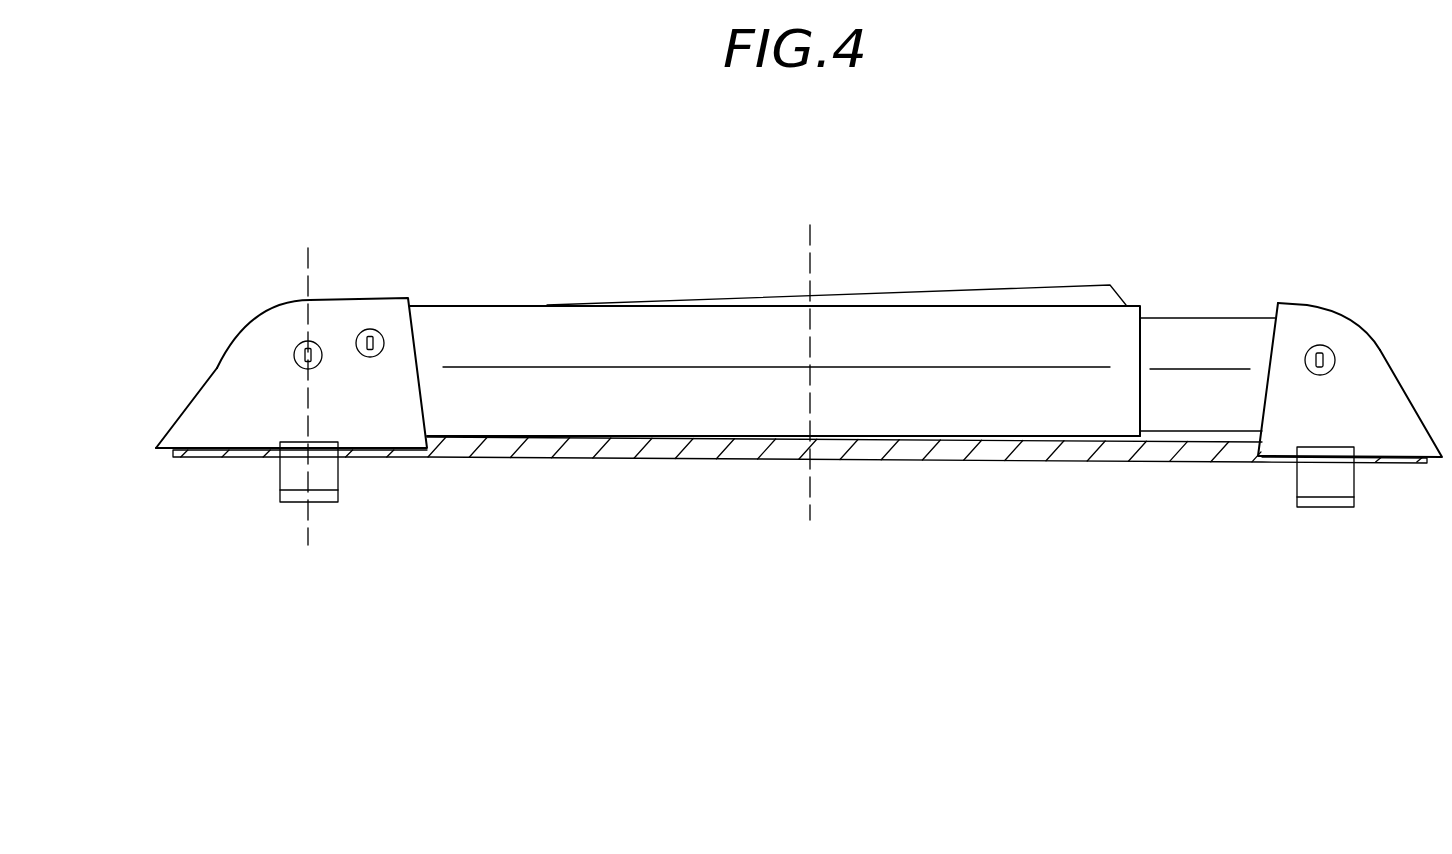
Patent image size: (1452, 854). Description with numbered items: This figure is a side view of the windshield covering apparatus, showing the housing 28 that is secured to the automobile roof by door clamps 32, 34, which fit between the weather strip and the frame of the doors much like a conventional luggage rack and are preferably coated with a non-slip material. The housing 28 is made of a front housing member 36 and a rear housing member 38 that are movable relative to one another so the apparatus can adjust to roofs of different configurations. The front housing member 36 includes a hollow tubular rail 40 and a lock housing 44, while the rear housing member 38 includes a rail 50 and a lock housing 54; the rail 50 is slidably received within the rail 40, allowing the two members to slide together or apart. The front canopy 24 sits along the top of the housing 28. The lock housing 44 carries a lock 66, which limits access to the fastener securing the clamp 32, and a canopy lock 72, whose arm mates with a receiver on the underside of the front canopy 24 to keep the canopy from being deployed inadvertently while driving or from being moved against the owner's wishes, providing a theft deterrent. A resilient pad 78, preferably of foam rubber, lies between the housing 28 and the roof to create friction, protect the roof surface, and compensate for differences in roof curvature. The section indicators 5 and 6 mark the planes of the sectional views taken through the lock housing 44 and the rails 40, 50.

The front canopy 24 is at (1030, 297).
The housing 28 is at (638, 410).
The door clamp 32 is at (281, 479).
The door clamp 34 is at (1312, 475).
The front housing member 36 is at (513, 272).
The rear housing member 38 is at (1280, 267).
The rail 40 is at (741, 413).
The lock housing 44 is at (217, 370).
The rail 50 is at (1182, 340).
The lock housing 54 is at (1307, 302).
The lock 66 is at (293, 355).
The canopy lock 72 is at (370, 328).
The resilient pad 78 is at (1021, 456).
The section line 5- 5 is at (330, 545).
The section line 6- 6 is at (830, 520).